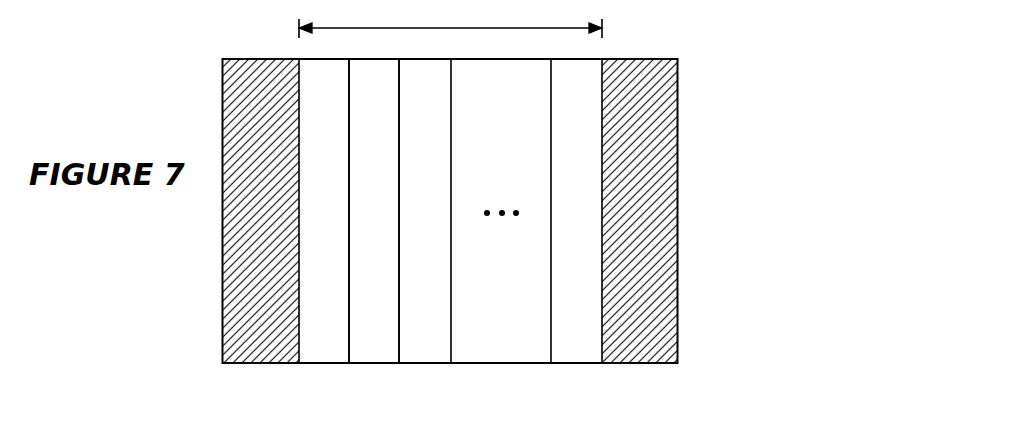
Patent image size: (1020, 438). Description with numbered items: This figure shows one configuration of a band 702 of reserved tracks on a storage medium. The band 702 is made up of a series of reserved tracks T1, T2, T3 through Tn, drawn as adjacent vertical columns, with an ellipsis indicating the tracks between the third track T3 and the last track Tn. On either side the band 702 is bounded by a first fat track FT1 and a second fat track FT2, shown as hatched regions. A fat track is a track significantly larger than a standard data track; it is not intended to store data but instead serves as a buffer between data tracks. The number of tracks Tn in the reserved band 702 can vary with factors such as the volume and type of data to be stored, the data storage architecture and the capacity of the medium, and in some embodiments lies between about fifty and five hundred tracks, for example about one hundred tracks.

The band of reserved tracks 702 is at (450, 29).
The first fat track FT1 is at (261, 211).
The second fat track FT2 is at (640, 211).
The reserved track T1 is at (324, 211).
The reserved track T2 is at (374, 211).
The reserved track T3 is at (425, 211).
The reserved track Tn is at (576, 211).